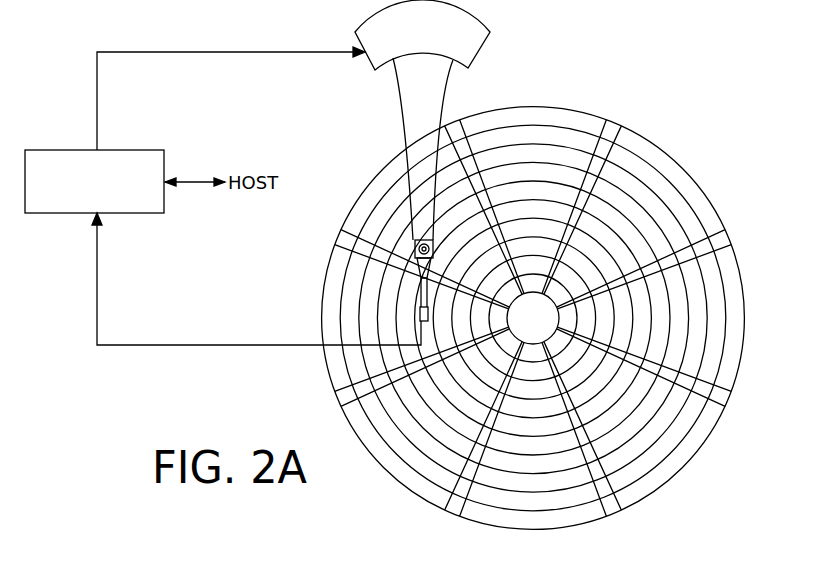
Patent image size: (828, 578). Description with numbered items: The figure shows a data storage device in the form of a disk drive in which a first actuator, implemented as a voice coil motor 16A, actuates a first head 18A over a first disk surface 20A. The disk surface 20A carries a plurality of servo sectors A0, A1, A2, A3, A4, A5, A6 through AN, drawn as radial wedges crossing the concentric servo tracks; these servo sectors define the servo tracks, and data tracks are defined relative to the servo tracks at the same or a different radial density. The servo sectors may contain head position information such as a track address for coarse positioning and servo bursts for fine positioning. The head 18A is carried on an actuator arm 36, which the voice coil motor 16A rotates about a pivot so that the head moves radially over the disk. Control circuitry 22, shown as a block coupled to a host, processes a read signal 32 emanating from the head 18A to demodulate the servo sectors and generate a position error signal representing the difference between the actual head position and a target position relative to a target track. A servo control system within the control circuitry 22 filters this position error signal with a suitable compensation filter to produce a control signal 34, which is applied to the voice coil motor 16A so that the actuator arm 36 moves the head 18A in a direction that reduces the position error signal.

The control circuitry 22 is at (130, 149).
The control signal 34 is at (97, 85).
The read signal 32 is at (219, 345).
The first actuator (voice coil motor) 16A is at (370, 63).
The actuator arm 36 is at (407, 137).
The first head 18A is at (412, 307).
The first disk surface 20A is at (664, 137).
The servo sector A0 is at (615, 130).
The servo sector A1 is at (722, 242).
The servo sector A2 is at (723, 402).
The servo sector A3 is at (610, 510).
The servo sector A4 is at (453, 506).
The servo sector A5 is at (340, 398).
The servo sector A6 is at (345, 232).
The servo sector AN is at (462, 128).